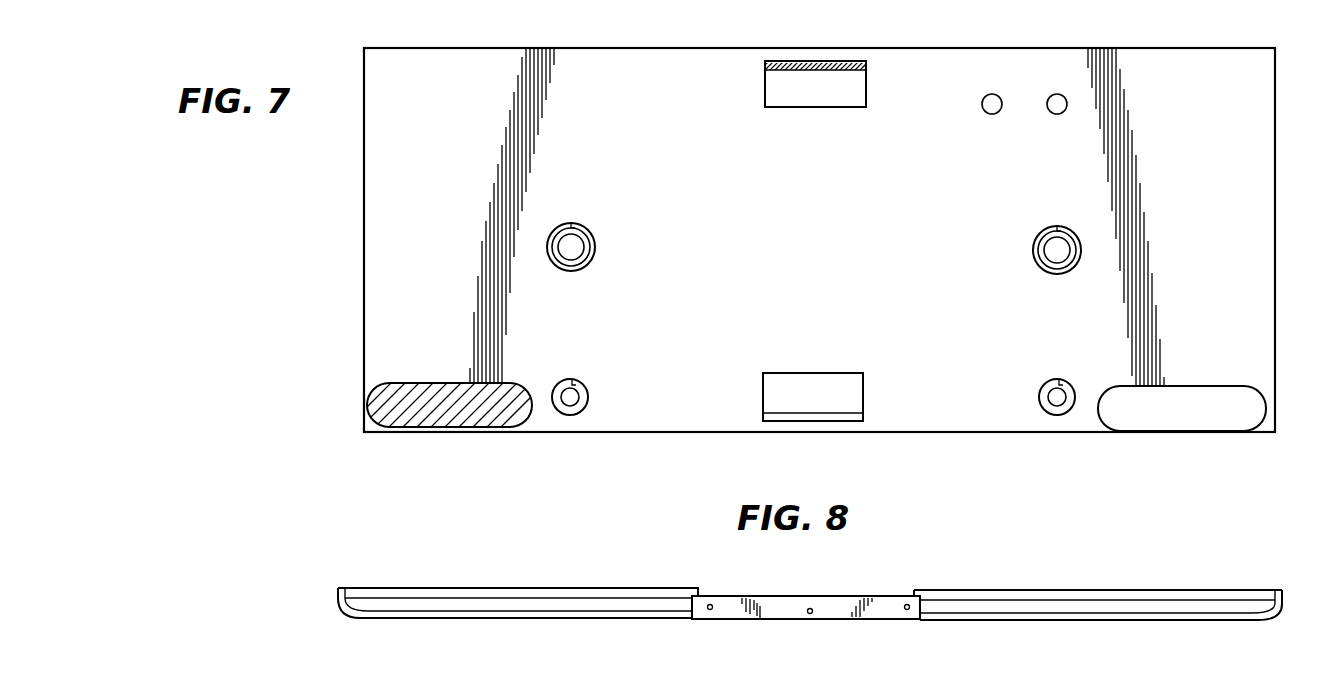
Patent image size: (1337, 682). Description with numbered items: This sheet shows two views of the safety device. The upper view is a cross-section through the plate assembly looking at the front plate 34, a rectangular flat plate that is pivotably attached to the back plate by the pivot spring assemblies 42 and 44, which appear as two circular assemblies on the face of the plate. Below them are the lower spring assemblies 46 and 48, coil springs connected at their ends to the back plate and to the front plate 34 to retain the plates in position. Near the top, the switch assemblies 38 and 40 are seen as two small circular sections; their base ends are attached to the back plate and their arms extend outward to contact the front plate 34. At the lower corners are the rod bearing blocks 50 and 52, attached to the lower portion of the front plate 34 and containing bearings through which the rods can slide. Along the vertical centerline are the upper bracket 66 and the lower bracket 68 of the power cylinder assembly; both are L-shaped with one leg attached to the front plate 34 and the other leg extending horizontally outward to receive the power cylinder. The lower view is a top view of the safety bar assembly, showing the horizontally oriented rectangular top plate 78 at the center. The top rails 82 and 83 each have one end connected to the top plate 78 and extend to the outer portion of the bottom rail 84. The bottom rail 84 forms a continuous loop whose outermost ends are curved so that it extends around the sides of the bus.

In FIG. 7, the front plate 34 is at (661, 165).
In FIG. 7, the switch assembly 38 is at (986, 115).
In FIG. 7, the switch assembly 40 is at (1066, 112).
In FIG. 7, the pivot spring assembly 42 is at (595, 254).
In FIG. 7, the pivot spring assembly 44 is at (1081, 255).
In FIG. 7, the lower spring assembly 46 is at (586, 388).
In FIG. 7, the lower spring assembly 48 is at (1062, 383).
In FIG. 7, the rod bearing block 50 is at (469, 388).
In FIG. 7, the rod bearing block 52 is at (1206, 394).
In FIG. 7, the upper bracket 66 is at (820, 93).
In FIG. 7, the lower bracket 68 is at (820, 387).
In FIG. 8, the top plate 78 is at (848, 606).
In FIG. 8, the top rail 82 is at (516, 592).
In FIG. 8, the top rail 83 is at (1028, 596).
In FIG. 8, the bottom rail 84 is at (541, 617).